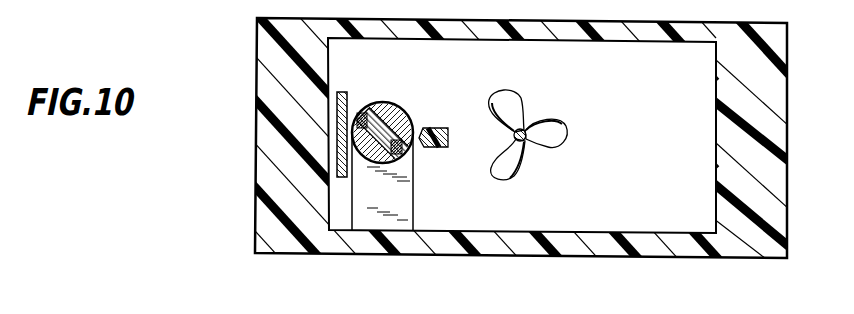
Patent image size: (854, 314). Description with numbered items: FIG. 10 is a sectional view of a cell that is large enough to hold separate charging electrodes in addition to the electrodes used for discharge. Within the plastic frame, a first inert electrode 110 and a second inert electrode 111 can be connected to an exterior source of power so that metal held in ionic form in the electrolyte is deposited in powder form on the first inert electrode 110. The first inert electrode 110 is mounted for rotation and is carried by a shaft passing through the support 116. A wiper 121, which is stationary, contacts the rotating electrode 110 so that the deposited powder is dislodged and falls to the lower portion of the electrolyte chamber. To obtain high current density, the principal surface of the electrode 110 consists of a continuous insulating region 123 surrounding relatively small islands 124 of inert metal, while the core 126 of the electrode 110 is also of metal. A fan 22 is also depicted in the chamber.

The fan 22 is at (530, 143).
The first inert electrode 110 is at (392, 112).
The second inert electrode 111 is at (336, 126).
The support 116 is at (399, 213).
The wiper 121 is at (445, 148).
The insulating region 123 is at (411, 148).
The islands of inert metal 124 is at (357, 111).
The core 126 is at (385, 110).